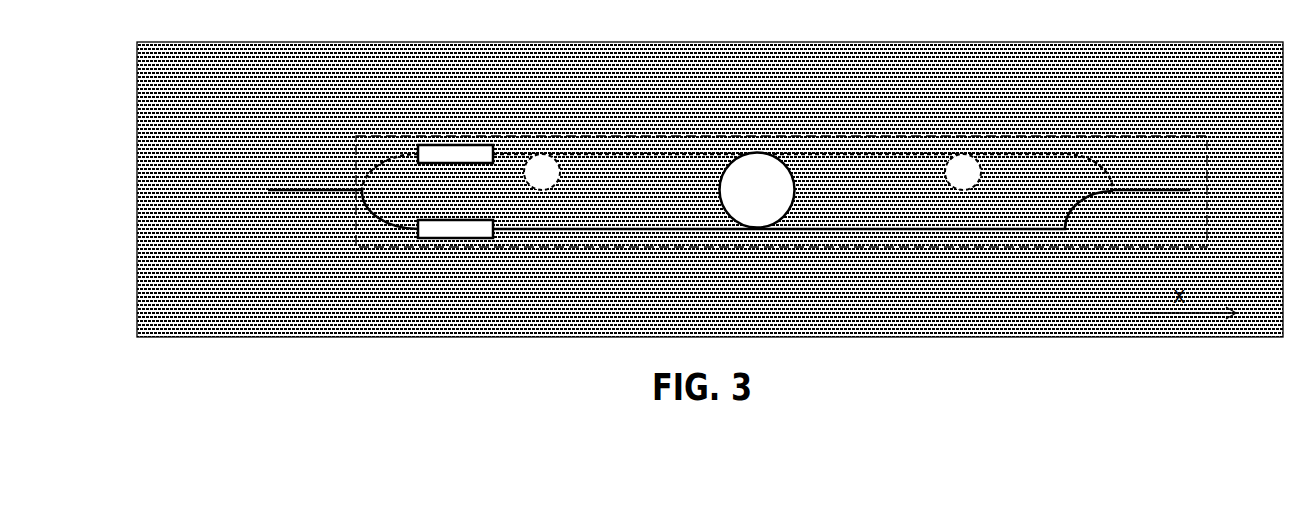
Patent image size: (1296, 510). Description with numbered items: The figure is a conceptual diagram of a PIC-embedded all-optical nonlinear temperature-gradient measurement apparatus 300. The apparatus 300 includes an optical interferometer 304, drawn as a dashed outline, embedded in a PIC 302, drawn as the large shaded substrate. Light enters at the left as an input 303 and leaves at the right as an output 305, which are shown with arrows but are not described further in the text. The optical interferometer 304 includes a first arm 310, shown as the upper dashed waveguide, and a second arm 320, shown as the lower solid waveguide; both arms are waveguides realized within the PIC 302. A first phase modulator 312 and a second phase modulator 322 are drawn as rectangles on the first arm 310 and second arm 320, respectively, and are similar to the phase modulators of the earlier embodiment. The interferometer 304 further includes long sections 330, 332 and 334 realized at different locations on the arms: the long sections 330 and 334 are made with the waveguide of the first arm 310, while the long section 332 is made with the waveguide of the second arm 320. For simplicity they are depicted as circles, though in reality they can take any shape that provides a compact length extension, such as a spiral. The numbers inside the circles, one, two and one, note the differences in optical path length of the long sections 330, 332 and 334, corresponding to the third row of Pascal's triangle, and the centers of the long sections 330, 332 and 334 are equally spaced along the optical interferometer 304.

The PIC-embedded all-optical nonlinear temperature-gradient measurement apparatus 300 is at (661, 178).
The PIC 302 is at (213, 303).
The input light 303 is at (328, 173).
The optical interferometer 304 is at (1210, 164).
The output light 305 is at (1172, 173).
The first arm 310 is at (816, 153).
The first phase modulator 312 is at (473, 145).
The second arm 320 is at (912, 230).
The second phase modulator 322 is at (475, 239).
The long section 330 is at (560, 164).
The long section 332 is at (787, 208).
The long section 334 is at (980, 163).